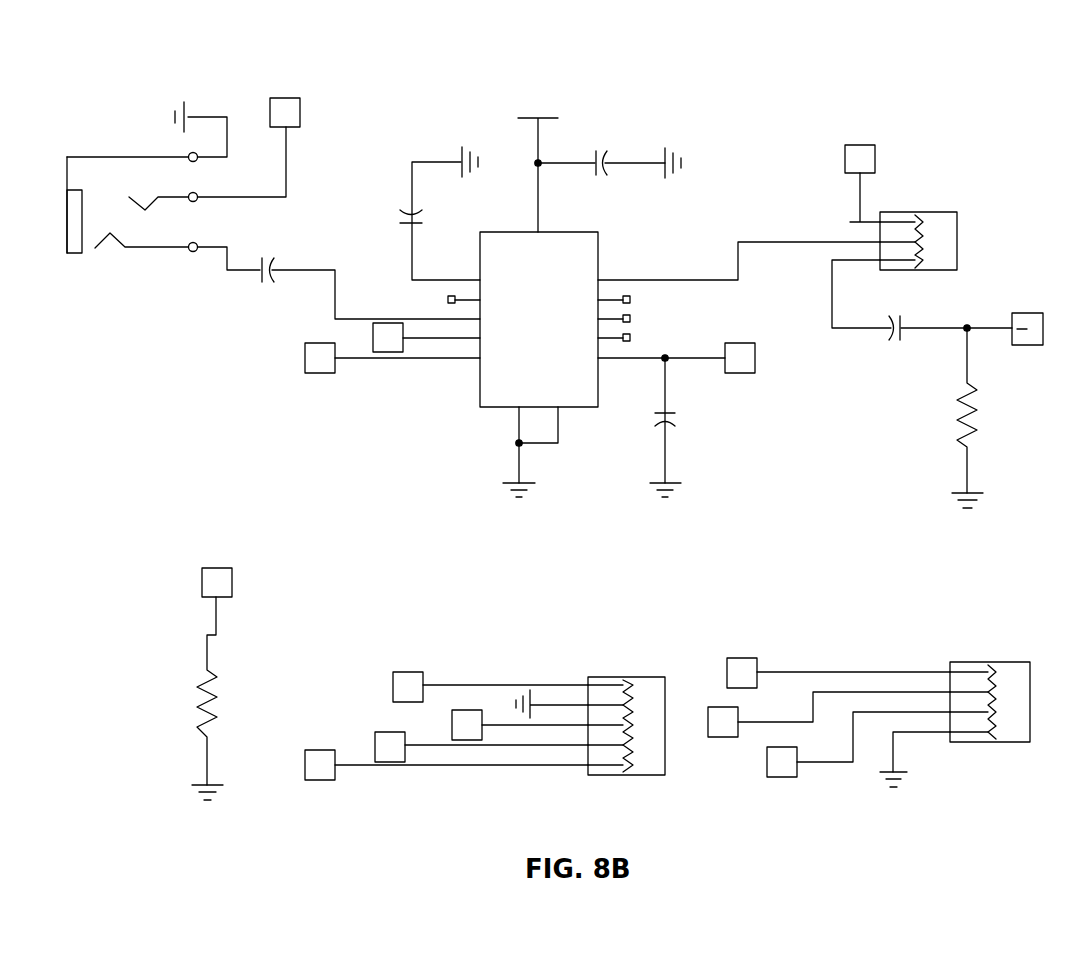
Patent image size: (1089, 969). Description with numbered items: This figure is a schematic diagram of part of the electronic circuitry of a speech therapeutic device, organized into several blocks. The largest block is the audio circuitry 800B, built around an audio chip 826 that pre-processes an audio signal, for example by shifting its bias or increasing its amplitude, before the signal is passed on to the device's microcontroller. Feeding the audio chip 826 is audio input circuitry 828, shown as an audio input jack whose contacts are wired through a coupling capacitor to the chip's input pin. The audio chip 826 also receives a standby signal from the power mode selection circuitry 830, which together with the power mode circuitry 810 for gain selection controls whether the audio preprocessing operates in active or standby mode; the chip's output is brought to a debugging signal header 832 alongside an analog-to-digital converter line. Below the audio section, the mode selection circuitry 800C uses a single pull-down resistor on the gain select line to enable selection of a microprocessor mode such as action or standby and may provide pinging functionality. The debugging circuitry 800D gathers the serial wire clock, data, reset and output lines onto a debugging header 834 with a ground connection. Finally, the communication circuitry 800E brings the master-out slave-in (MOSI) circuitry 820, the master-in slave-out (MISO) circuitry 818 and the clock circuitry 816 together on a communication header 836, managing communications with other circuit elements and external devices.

The audio circuitry 800B is at (767, 100).
The audio input circuitry 828 is at (95, 146).
The audio chip 826 is at (598, 252).
The power mode circuitry 810 is at (432, 360).
The power mode selection circuitry 830 is at (277, 356).
The debugging signal header 832 is at (938, 210).
The mode selection circuitry 800C is at (157, 534).
The debugging circuitry 800D is at (492, 654).
The debugging header 834 is at (649, 677).
The communication circuitry 800E is at (850, 639).
The master-out slave-in (MOSI) circuitry 820 is at (870, 672).
The master-in slave-out (MISO) circuitry 818 is at (903, 692).
The clock circuitry 816 is at (828, 763).
The communication header 836 is at (1013, 662).